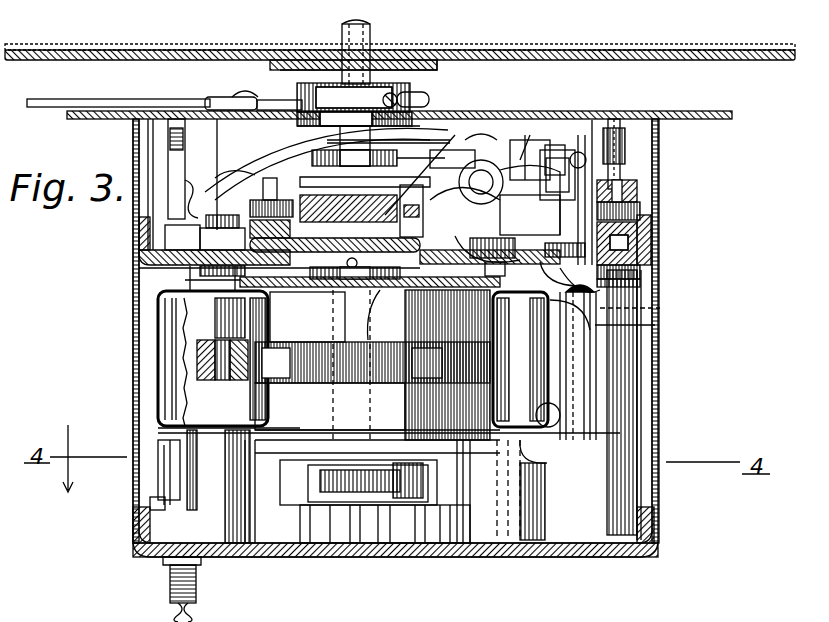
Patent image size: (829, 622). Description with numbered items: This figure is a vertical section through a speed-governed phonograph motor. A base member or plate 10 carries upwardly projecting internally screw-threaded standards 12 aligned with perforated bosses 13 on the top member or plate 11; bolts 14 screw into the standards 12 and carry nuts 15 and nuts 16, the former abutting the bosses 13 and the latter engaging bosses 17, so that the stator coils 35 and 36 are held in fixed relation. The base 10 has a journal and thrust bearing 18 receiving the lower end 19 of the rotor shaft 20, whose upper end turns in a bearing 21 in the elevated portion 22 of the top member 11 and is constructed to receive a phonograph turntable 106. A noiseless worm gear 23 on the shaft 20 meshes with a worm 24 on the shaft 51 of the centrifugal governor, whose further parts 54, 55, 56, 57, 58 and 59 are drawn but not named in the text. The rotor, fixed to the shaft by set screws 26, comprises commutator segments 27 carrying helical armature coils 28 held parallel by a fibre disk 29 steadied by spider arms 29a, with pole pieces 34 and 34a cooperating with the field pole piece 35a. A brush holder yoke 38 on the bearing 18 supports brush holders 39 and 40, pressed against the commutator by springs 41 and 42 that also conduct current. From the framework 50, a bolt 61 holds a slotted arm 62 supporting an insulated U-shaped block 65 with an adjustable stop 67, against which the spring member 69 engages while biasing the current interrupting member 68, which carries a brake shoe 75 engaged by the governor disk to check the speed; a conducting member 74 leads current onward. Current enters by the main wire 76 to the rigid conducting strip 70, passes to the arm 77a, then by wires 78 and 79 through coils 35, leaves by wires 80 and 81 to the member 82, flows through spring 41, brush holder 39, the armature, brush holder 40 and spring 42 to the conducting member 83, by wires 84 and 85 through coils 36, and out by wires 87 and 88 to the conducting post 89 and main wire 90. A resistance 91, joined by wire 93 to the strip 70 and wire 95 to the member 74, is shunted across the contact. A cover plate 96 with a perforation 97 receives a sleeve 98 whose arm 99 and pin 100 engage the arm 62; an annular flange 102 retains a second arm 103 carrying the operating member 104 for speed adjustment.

The base member or plate 10 is at (655, 533).
The top member or plate 11 is at (652, 236).
The internally screw-threaded standards 12 is at (640, 472).
The perforated bosses 13 is at (200, 272).
The bolts 14 is at (218, 232).
The nuts 15 is at (195, 280).
The nuts 16 is at (140, 252).
The bosses 17 is at (140, 259).
The journal and thrust bearing 18 is at (318, 545).
The lower end of the rotor shaft 19 is at (380, 548).
The rotor shaft 20 is at (372, 50).
The bearing 21 is at (400, 160).
The elevated portion 22 is at (254, 194).
The noiseless worm gear 23 is at (323, 219).
The worm 24 is at (442, 150).
The set screws 26 is at (335, 258).
The commutator segments 27 is at (350, 545).
The helical armature coils or windings 28 is at (372, 362).
The fibre disk 29 is at (327, 365).
The arms of the spider 29a is at (489, 273).
The pole pieces 34 is at (389, 417).
The pole pieces 34a is at (332, 374).
The field or stator windings 35 is at (520, 359).
The pole piece 35a is at (369, 379).
The field or stator windings 36 is at (195, 360).
The brush holder yoke or member 38 is at (420, 548).
The brush holder 39 is at (278, 468).
The brush holder 40 is at (424, 474).
The resilient member or biasing spring 41 is at (473, 491).
The resilient member or biasing spring 42 is at (262, 545).
The framework 50 is at (383, 315).
The shaft 51 is at (447, 365).
The bracket 54 is at (411, 211).
The link 55 is at (465, 175).
The collar 56 is at (487, 218).
The nut 57 is at (650, 212).
The housing 58 is at (530, 200).
The nut 59 is at (640, 290).
The bolt 61 is at (565, 128).
The arm 62 is at (488, 130).
The insulated U-shaped block 65 is at (640, 130).
The adjustable stop 67 is at (481, 169).
The current interrupting member 68 is at (580, 150).
The spring member 69 is at (540, 132).
The rigid conducting member or strip 70 is at (528, 130).
The conducting member 74 is at (642, 325).
The stud or brake shoe 75 is at (600, 128).
The main conducting wire 76 is at (264, 158).
The arm 77a is at (567, 277).
The wire 78 is at (548, 366).
The wire 79 is at (557, 340).
The wire 80 is at (570, 345).
The wire 81 is at (559, 419).
The member 82 is at (538, 490).
The conducting member 83 is at (185, 480).
The wire 84 is at (185, 440).
The wire 85 is at (160, 431).
The wire 87 is at (182, 306).
The wire 88 is at (178, 330).
The conducting post 89 is at (146, 223).
The main wire 90 is at (186, 198).
The resistance 91 is at (640, 381).
The wire 93 is at (645, 186).
The wire 95 is at (645, 307).
The cover plate 96 is at (123, 112).
The perforation 97 is at (288, 101).
The sleeve 98 is at (316, 83).
The laterally extending arm 99 is at (405, 96).
The pin 100 is at (330, 136).
The annular flange 102 is at (392, 96).
The second arm 103 is at (228, 98).
The operating member 104 is at (72, 99).
The phonograph turntable 106 is at (120, 50).